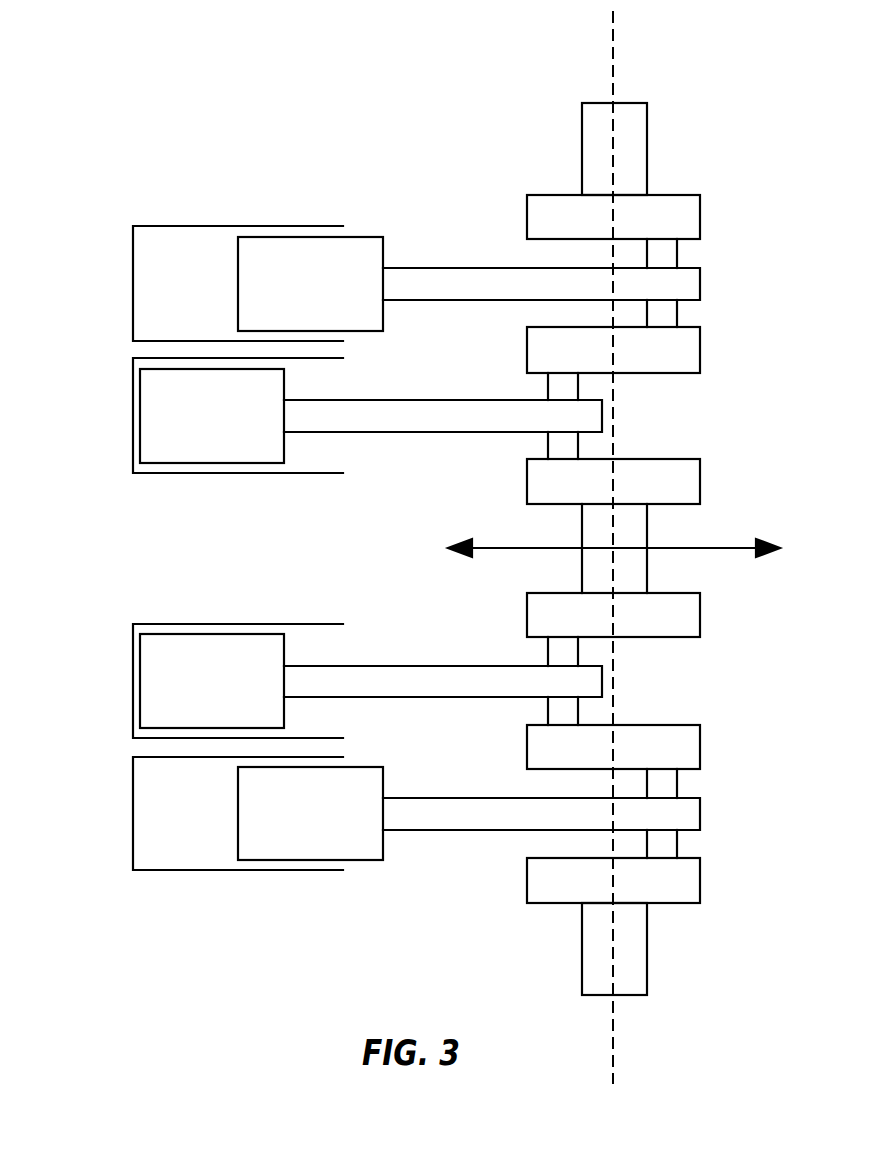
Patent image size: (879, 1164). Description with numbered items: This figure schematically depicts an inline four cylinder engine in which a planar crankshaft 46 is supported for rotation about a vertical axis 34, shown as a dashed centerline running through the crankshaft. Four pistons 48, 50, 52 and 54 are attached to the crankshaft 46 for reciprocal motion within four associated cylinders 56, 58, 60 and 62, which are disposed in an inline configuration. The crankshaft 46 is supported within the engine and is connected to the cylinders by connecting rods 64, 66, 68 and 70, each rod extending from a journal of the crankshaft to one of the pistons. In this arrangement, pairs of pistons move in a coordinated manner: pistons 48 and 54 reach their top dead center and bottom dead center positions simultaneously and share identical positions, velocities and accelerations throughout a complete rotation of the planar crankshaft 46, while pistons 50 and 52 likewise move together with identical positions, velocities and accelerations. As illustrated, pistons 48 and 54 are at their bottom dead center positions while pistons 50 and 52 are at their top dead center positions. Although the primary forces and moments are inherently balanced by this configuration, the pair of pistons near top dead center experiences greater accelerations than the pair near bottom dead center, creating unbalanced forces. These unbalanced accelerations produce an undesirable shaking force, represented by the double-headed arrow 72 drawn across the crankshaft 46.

The vertical axis 34 is at (609, 43).
The planar crankshaft 46 is at (612, 103).
The piston 48 is at (277, 843).
The piston 50 is at (167, 692).
The piston 52 is at (172, 442).
The piston 54 is at (275, 270).
The cylinder 56 is at (133, 812).
The cylinder 58 is at (133, 650).
The cylinder 60 is at (133, 388).
The cylinder 62 is at (133, 258).
The connecting rod 64 is at (455, 830).
The connecting rod 66 is at (423, 697).
The connecting rod 68 is at (436, 432).
The connecting rod 70 is at (453, 300).
The arrow 72 is at (710, 548).